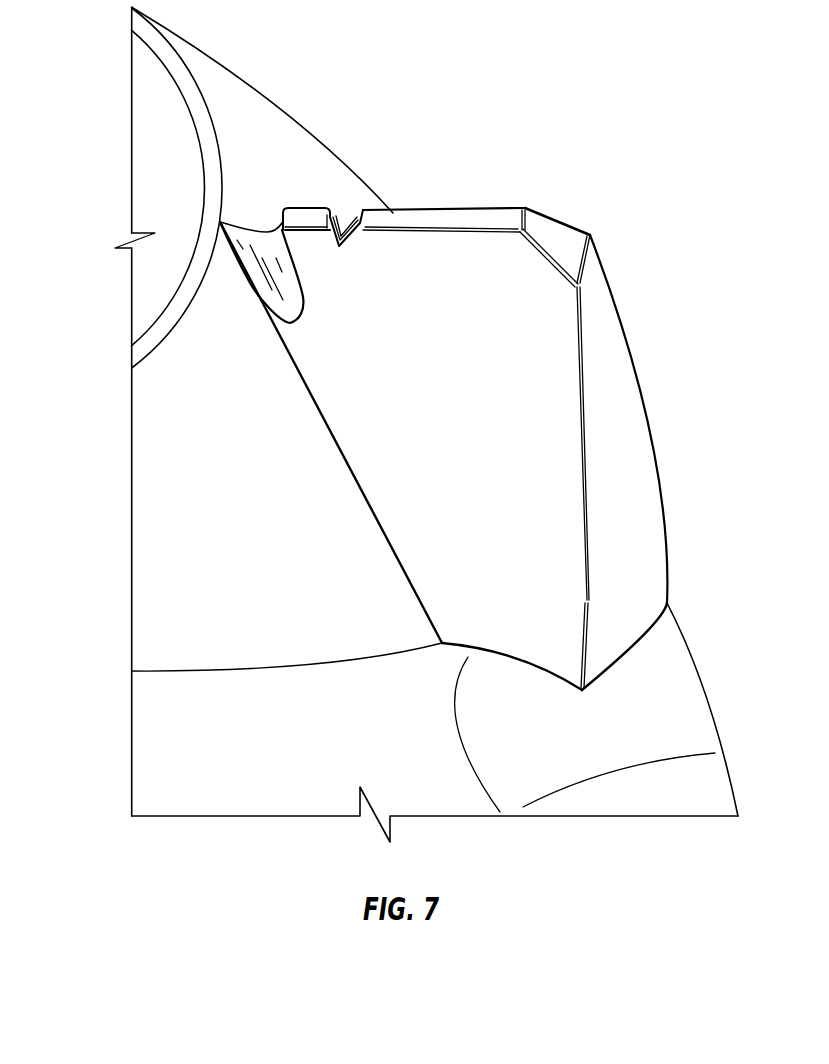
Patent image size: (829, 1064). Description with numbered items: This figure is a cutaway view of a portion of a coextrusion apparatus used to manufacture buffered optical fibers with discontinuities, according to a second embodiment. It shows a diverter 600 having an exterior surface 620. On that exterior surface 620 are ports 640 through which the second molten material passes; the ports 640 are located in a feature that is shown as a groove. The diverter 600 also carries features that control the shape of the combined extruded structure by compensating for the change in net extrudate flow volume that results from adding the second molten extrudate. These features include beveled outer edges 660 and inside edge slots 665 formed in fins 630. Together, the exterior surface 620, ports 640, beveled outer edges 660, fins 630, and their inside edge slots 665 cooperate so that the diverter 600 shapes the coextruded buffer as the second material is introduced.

The diverter 600 is at (97, 417).
The exterior surface 620 is at (155, 542).
The fin 630 is at (557, 398).
The port 640 is at (336, 218).
The beveled outer edge 660 is at (563, 212).
The inside edge slot 665 is at (255, 220).